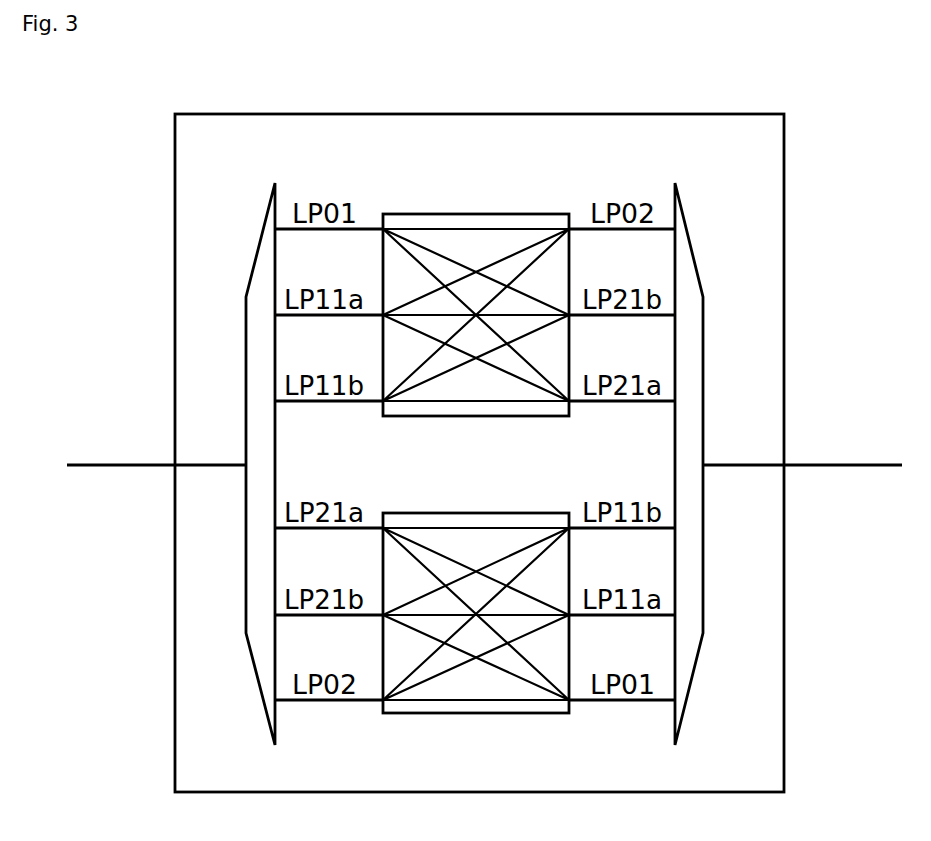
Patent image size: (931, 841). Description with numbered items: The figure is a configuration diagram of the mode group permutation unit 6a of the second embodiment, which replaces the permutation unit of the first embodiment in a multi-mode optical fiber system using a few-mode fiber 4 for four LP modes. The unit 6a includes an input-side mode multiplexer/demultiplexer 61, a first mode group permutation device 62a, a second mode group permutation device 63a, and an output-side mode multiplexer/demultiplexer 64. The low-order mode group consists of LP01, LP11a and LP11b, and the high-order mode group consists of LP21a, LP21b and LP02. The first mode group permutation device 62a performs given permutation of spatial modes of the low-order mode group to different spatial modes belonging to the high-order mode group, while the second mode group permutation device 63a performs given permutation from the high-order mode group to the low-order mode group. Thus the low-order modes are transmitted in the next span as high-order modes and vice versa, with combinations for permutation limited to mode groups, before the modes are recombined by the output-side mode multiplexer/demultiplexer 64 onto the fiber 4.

The few-mode fiber 4 is at (110, 463).
The mode group permutation unit 6a is at (717, 113).
The input-side mode multiplexer/demultiplexer 61 is at (258, 245).
The output-side mode multiplexer/demultiplexer 64 is at (693, 253).
The first mode group permutation device 62a is at (450, 213).
The second mode group permutation device 63a is at (450, 512).